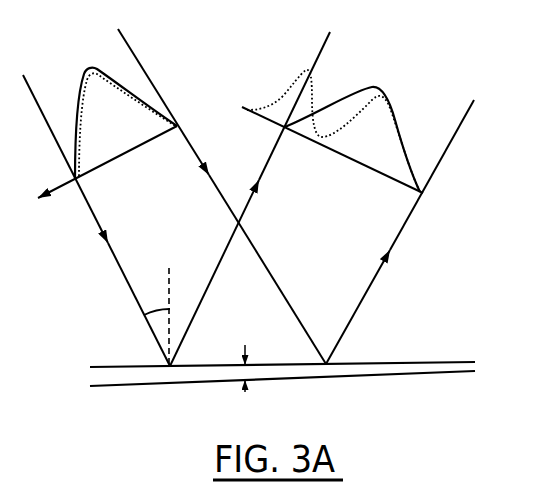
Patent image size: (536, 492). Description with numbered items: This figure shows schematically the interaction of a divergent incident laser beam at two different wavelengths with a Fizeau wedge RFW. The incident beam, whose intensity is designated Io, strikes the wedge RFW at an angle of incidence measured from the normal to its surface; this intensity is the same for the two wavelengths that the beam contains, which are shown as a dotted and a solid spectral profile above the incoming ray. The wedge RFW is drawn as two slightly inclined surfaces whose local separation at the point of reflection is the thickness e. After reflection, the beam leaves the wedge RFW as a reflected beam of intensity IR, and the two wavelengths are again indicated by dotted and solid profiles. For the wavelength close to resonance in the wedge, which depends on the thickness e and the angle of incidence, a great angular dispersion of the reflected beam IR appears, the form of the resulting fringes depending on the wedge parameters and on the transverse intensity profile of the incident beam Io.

The intensity of a divergent incident laser beam Io is at (176, 127).
The intensity of the reflected beam IR is at (432, 176).
The thickness of the Fizeau wedge at the point of reflection e is at (253, 368).
The Fizeau wedge RFW is at (292, 357).